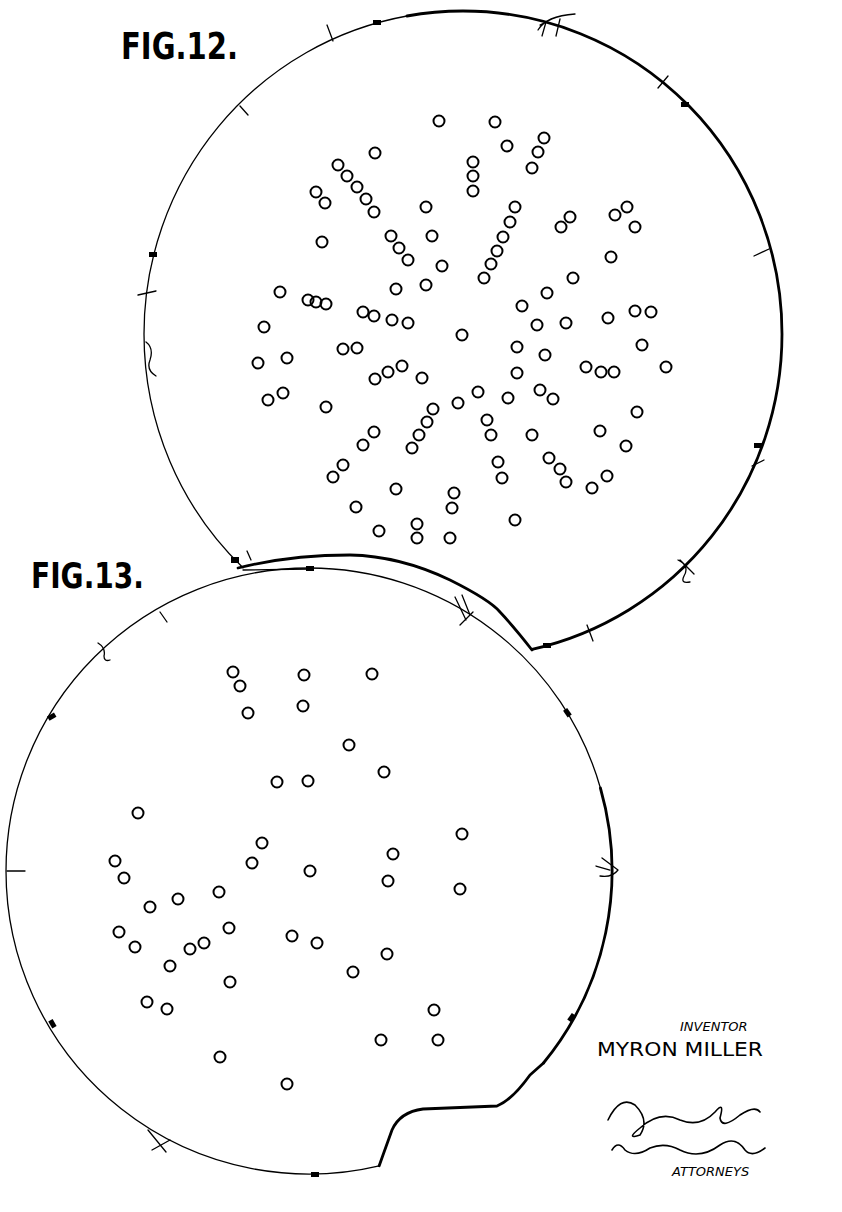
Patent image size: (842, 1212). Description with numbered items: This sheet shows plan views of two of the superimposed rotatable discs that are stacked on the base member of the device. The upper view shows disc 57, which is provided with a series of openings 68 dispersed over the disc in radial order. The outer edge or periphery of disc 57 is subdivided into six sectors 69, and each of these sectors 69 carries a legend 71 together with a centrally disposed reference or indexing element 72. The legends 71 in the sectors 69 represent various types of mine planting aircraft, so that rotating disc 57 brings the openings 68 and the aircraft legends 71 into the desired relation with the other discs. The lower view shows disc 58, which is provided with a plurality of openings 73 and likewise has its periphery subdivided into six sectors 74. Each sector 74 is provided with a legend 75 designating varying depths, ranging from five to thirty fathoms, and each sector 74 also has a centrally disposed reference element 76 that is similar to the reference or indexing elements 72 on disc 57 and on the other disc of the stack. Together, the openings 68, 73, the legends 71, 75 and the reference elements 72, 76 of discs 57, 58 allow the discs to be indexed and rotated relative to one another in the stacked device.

In FIG. 12, the disc 57 is at (656, 592).
In FIG. 13, the disc 58 is at (610, 808).
In FIG. 12, the openings 68 is at (358, 141).
In FIG. 12, the sectors 69 is at (571, 16).
In FIG. 12, the legend 71 is at (331, 36).
In FIG. 12, the reference or indexing element 72 is at (374, 23).
In FIG. 13, the openings 73 is at (239, 672).
In FIG. 13, the sectors 74 is at (100, 648).
In FIG. 13, the legend 75 is at (62, 705).
In FIG. 13, the reference element 76 is at (50, 715).